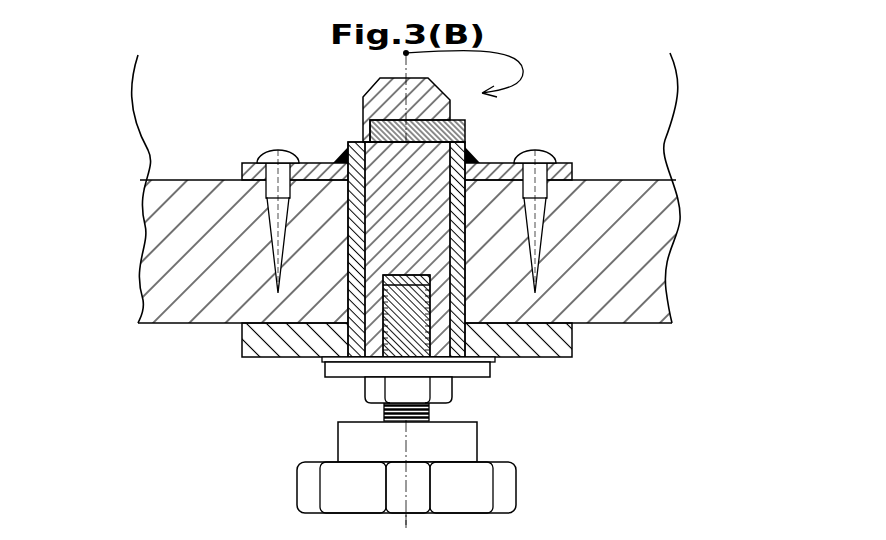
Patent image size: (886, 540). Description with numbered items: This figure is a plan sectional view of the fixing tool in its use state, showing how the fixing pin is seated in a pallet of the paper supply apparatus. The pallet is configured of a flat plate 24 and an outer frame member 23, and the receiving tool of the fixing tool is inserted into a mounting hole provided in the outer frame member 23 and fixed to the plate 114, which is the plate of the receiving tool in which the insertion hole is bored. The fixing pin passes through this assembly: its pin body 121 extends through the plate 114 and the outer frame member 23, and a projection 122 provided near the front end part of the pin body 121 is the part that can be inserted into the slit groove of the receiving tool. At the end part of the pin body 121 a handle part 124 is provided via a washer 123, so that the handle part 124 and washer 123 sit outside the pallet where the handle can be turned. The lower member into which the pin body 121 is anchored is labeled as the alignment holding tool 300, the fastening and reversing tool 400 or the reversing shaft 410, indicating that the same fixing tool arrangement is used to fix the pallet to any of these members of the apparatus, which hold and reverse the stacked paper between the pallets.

The plate 114 is at (247, 167).
The pin body 121 is at (380, 192).
The projection 122 is at (467, 125).
The washer 123 is at (327, 378).
The handle part 124 is at (507, 490).
The outer frame member 23 is at (635, 255).
The flat plate 24 is at (640, 122).
The alignment holding tool 300 is at (524, 374).
The fastening and reversing tool 400 is at (524, 374).
The reversing shaft 410 is at (508, 343).